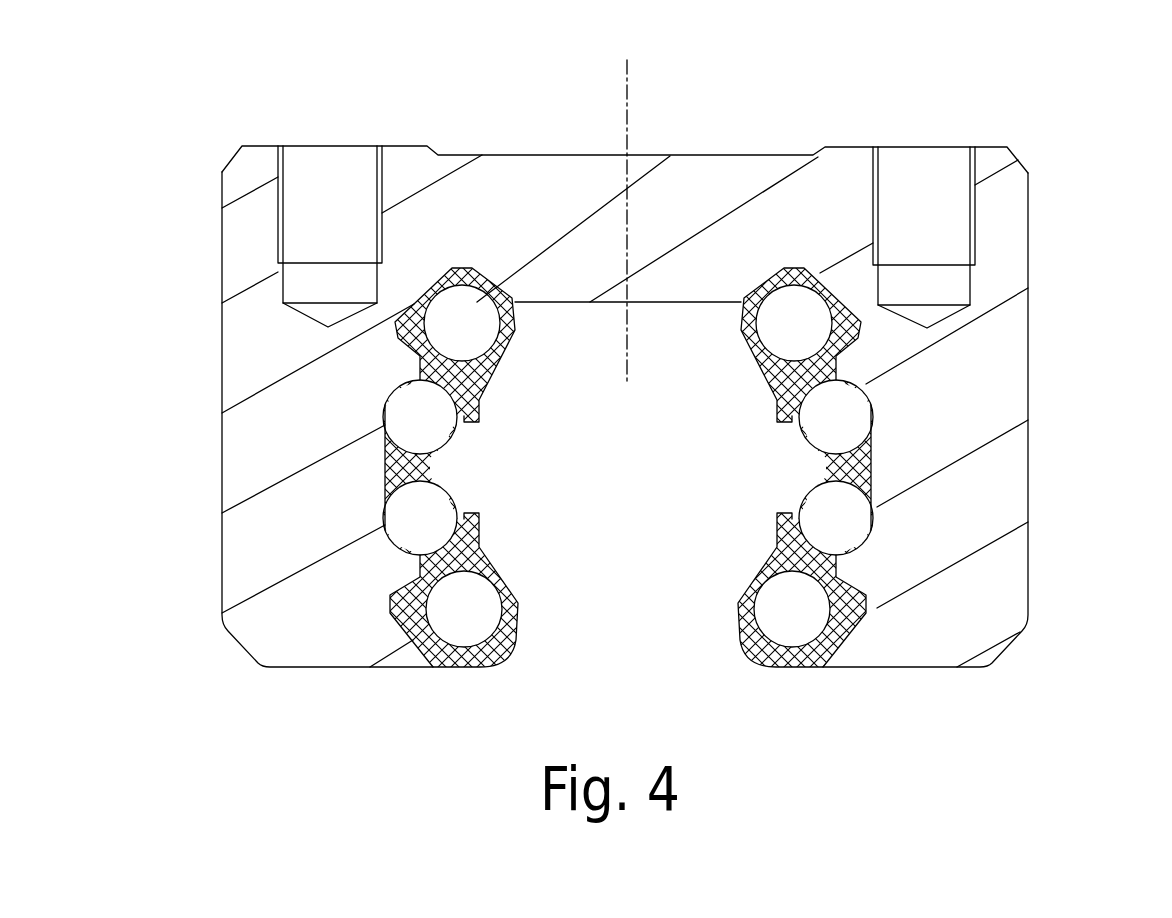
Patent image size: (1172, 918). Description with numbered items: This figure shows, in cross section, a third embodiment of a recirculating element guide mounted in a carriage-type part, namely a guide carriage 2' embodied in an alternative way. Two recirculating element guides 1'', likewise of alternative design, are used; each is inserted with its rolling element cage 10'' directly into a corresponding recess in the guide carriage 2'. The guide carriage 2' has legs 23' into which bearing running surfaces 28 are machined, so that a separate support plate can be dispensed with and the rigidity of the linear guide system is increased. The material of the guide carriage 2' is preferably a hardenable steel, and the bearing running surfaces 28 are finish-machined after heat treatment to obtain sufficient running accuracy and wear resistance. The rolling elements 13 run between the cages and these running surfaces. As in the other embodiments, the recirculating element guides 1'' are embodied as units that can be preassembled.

The recirculating element guide 1'' is at (628, 359).
The guide carriage 2' is at (625, 337).
The rolling element cage 10'' is at (497, 353).
The rolling element (ball) 13 is at (398, 417).
The leg 23' is at (626, 422).
The bearing running surface 28 is at (464, 461).